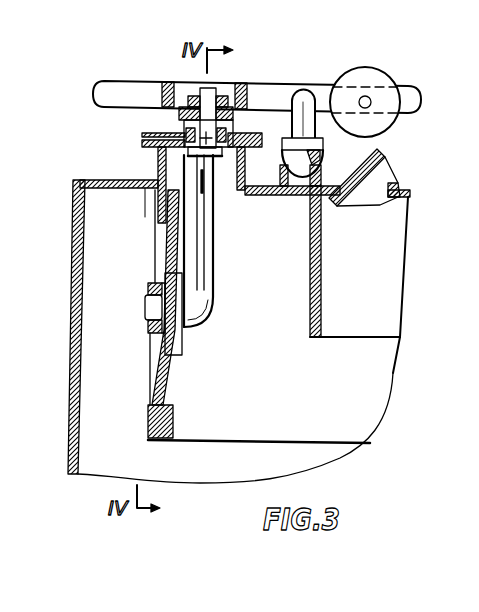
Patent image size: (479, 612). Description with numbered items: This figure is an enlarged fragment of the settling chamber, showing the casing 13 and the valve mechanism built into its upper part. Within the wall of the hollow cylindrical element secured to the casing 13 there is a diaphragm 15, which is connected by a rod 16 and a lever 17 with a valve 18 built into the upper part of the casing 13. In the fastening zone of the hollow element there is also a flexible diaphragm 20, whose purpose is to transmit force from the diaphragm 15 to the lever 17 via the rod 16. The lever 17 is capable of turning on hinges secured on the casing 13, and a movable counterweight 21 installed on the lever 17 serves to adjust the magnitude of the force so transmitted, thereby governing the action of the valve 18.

The casing 13 is at (78, 258).
The diaphragm 15 is at (163, 383).
The rod 16 is at (158, 307).
The lever 17 is at (263, 92).
The valve 18 is at (322, 160).
The flexible diaphragm 20 is at (142, 138).
The movable counterweight 21 is at (381, 81).